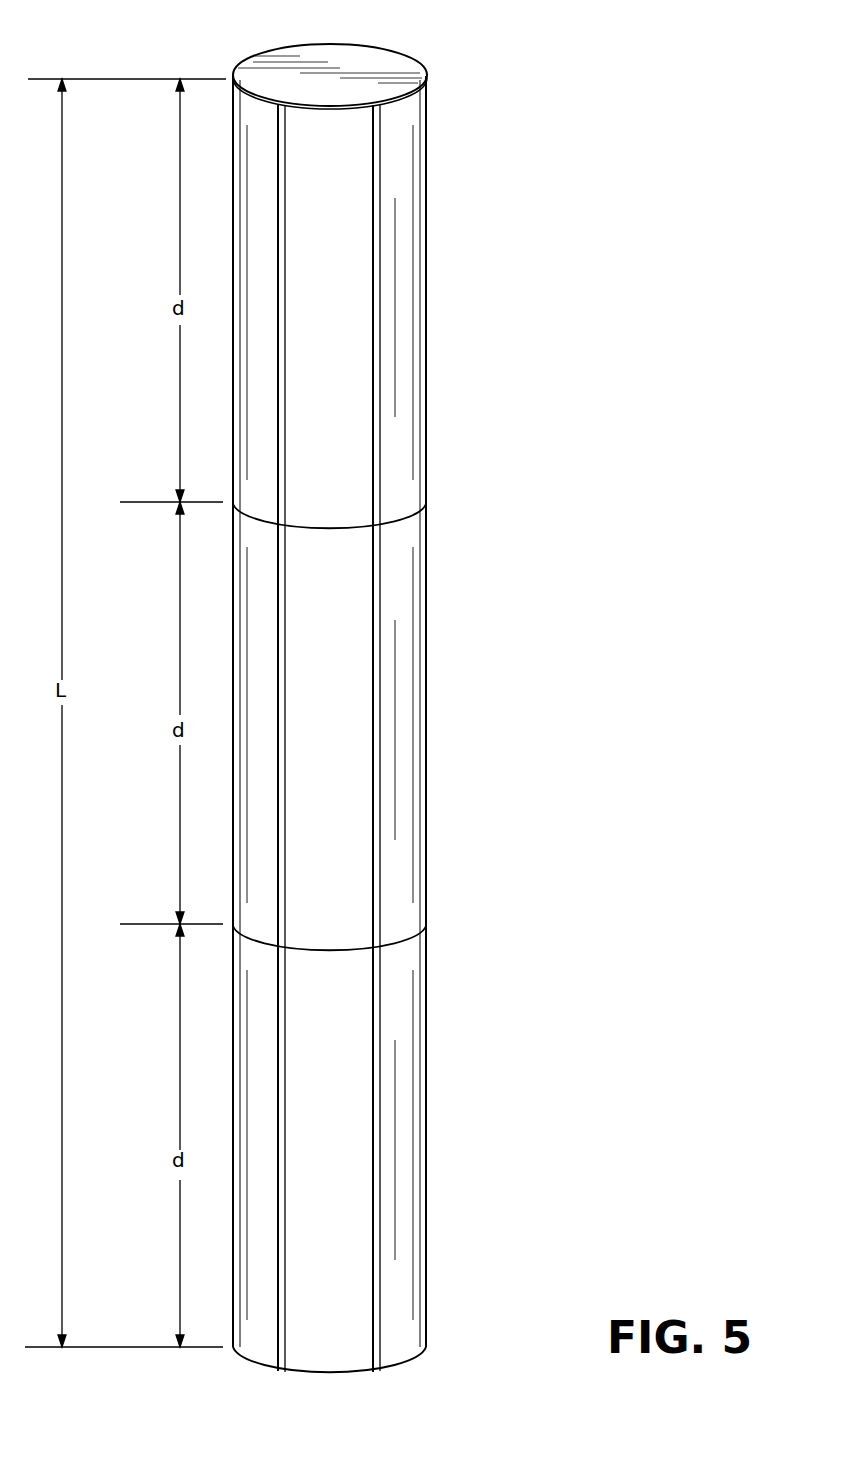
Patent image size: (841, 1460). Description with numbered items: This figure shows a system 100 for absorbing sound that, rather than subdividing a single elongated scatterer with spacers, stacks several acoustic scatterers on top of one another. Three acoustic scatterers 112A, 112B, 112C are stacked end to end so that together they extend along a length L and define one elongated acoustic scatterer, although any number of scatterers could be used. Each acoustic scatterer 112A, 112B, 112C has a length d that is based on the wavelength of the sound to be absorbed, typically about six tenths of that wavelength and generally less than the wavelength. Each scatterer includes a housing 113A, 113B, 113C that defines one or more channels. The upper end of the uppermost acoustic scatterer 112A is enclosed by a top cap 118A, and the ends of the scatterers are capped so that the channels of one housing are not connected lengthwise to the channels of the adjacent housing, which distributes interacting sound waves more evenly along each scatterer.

The system for absorbing sound 100 is at (541, 115).
The top cap 118A is at (268, 80).
The acoustic scatterer 112A is at (408, 273).
The housing 113A is at (427, 362).
The acoustic scatterer 112B is at (408, 663).
The housing 113B is at (427, 752).
The acoustic scatterer 112C is at (408, 1069).
The housing 113C is at (427, 1160).